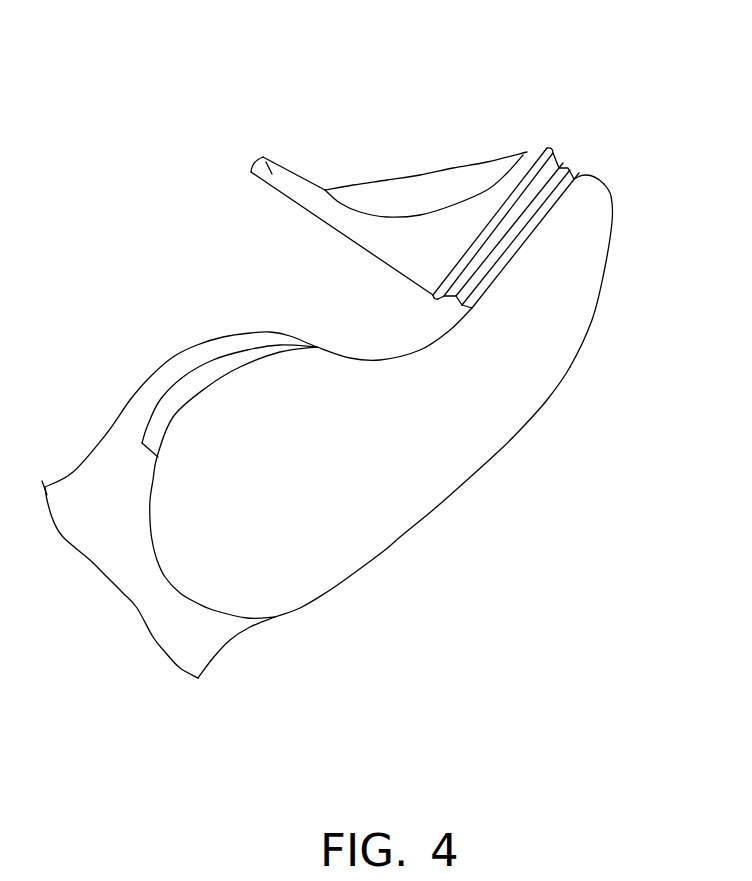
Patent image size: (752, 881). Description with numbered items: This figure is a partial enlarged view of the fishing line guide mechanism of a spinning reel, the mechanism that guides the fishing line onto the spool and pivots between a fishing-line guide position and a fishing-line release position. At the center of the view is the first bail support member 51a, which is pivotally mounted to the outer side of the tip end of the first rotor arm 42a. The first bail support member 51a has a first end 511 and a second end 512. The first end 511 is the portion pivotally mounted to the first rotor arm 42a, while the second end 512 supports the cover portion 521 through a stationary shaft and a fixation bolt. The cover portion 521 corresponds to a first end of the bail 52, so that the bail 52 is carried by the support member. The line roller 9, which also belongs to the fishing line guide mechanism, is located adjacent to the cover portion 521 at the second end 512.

The bail 52 is at (280, 160).
The cover portion 521 is at (528, 160).
The line roller 9 is at (563, 167).
The second end 512 is at (592, 185).
The first bail support member 51a is at (468, 495).
The first end 511 is at (297, 573).
The first rotor arm 42a is at (212, 632).